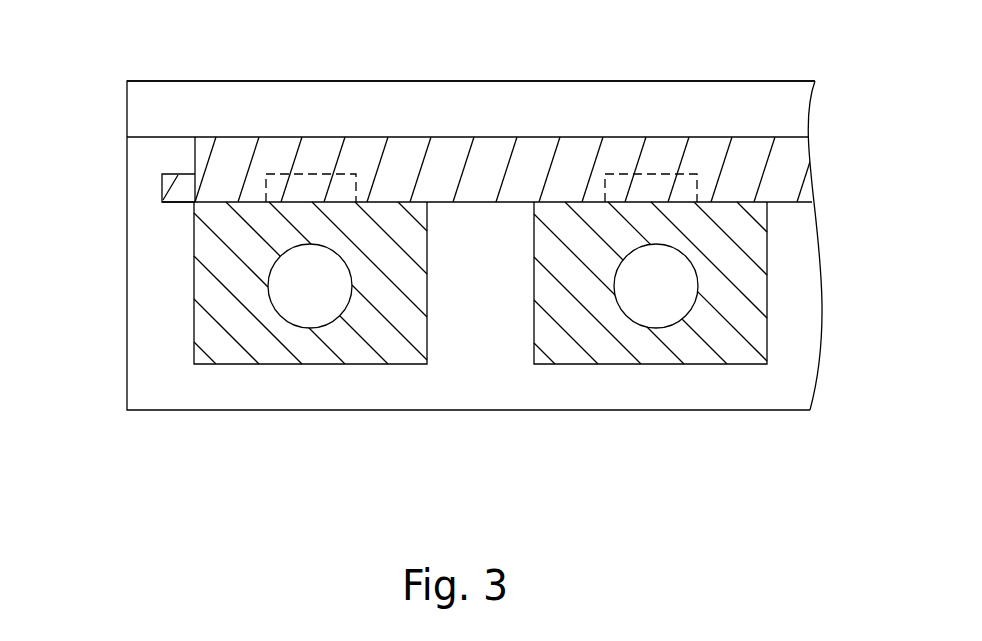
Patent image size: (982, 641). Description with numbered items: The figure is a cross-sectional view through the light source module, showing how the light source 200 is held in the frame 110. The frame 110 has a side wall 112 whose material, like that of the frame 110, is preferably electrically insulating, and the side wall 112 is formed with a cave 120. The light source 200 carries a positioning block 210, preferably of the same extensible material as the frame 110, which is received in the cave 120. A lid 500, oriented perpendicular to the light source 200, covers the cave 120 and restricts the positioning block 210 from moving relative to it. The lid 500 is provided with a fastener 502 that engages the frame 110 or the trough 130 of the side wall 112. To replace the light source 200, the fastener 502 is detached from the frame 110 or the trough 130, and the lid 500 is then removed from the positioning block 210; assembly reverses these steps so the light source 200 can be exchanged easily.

The frame 110 is at (139, 303).
The side wall 112 is at (470, 80).
The cave 120 is at (533, 288).
The trough 130 is at (162, 185).
The light source 200 is at (305, 306).
The positioning block 210 is at (414, 280).
The lid 500 is at (348, 155).
The fastener 502 is at (177, 182).